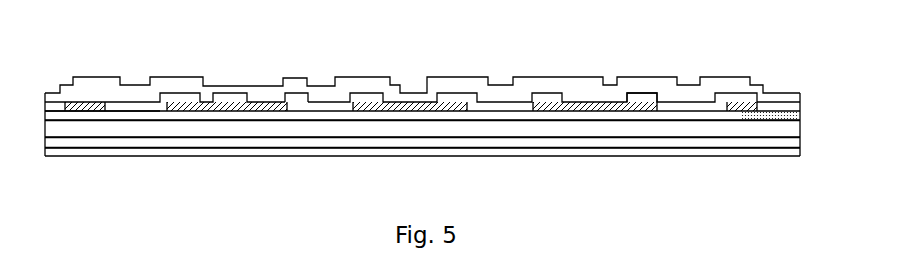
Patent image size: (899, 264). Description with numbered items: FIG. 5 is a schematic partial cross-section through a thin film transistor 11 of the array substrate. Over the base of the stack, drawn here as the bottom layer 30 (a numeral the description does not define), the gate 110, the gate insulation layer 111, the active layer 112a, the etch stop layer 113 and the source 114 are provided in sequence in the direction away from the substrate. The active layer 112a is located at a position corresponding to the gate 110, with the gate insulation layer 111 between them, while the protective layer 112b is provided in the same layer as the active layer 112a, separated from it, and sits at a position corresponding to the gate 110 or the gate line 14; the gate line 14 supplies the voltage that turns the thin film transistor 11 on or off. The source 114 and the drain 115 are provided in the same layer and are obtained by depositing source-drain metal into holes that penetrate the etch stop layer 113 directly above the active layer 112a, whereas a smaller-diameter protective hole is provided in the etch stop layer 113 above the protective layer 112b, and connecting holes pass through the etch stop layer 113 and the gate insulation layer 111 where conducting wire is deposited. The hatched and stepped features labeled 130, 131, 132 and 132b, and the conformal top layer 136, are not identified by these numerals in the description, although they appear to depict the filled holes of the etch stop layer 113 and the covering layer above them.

The thin film transistor 11 is at (128, 113).
The gate line 14 is at (800, 143).
The substrate 30 is at (800, 153).
The gate 110 is at (115, 140).
The gate insulation layer 111 is at (800, 128).
The active layer 112a is at (347, 115).
The protective layer 112b is at (533, 110).
The etch stop layer 113 is at (800, 114).
The source 114 is at (100, 100).
The drain 115 is at (292, 104).
The conductive block 130 is at (100, 108).
The electrode 131 is at (287, 108).
The electrode pattern 132 is at (723, 107).
The second electrode pattern portion 132b is at (653, 110).
The passivation layer 136 is at (790, 98).